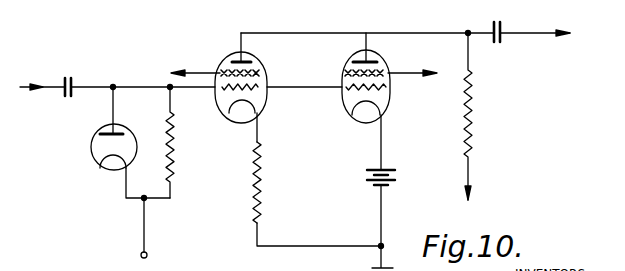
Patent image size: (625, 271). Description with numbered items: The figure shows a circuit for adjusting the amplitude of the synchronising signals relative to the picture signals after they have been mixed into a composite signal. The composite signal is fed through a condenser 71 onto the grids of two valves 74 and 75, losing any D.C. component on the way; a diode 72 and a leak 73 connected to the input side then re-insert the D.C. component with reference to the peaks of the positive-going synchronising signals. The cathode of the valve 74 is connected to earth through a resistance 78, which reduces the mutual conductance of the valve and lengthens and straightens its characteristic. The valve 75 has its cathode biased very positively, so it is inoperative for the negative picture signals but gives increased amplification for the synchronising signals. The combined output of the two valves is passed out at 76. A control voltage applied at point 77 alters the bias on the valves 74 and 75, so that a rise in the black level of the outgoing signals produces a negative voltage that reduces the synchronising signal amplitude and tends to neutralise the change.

The condenser 71 is at (74, 81).
The diode 72 is at (98, 133).
The leak 73 is at (176, 118).
The valve 74 is at (270, 63).
The valve 75 is at (388, 61).
The output point 76 is at (520, 36).
The control voltage point 77 is at (140, 254).
The resistance 78 is at (254, 172).